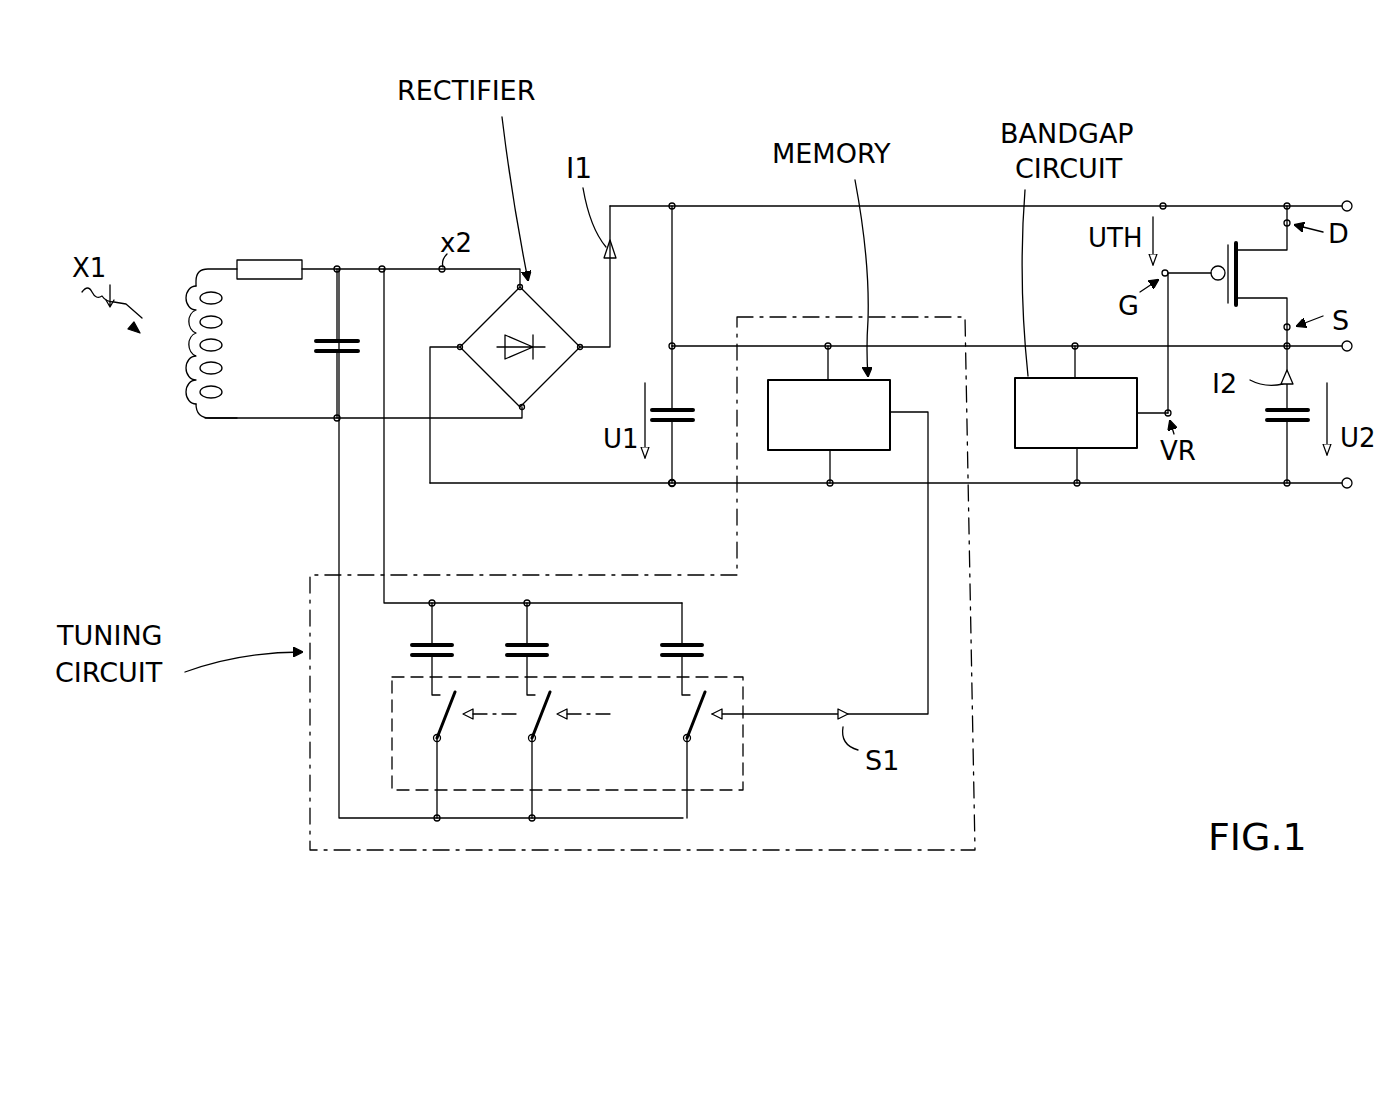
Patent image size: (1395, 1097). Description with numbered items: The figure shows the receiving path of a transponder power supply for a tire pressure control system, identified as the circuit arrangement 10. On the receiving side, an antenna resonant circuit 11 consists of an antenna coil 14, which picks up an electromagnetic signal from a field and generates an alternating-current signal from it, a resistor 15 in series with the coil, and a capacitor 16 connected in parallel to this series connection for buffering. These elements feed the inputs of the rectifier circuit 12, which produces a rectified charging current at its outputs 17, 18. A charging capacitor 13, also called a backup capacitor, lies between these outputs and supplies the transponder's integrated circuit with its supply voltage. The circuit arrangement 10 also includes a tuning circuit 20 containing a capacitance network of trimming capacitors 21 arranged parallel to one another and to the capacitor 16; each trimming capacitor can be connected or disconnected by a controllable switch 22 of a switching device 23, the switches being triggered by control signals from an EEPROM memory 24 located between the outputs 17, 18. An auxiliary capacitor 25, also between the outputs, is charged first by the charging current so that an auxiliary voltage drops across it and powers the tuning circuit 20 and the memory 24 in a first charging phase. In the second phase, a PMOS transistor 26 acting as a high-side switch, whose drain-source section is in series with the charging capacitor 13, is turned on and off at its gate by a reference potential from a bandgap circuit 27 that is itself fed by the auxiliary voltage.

The circuit arrangement 10 is at (1105, 604).
The antenna resonant circuit 11 is at (268, 357).
The rectifier circuit 12 is at (556, 380).
The charging capacitor 13 is at (1278, 421).
The antenna coil 14 is at (193, 397).
The resistor 15 is at (262, 259).
The capacitor 16 is at (318, 344).
The output of the rectifier circuit 17 is at (674, 204).
The output of the rectifier circuit 18 is at (678, 490).
The tuning circuit 20 is at (978, 768).
The trimming capacitors 21 is at (424, 634).
The controllable switch 22 is at (447, 727).
The switching device 23 is at (752, 782).
The memory 24 is at (848, 430).
The auxiliary capacitor 25 is at (686, 407).
The PMOS transistor 26 is at (1250, 282).
The bandgap circuit 27 is at (1095, 428).